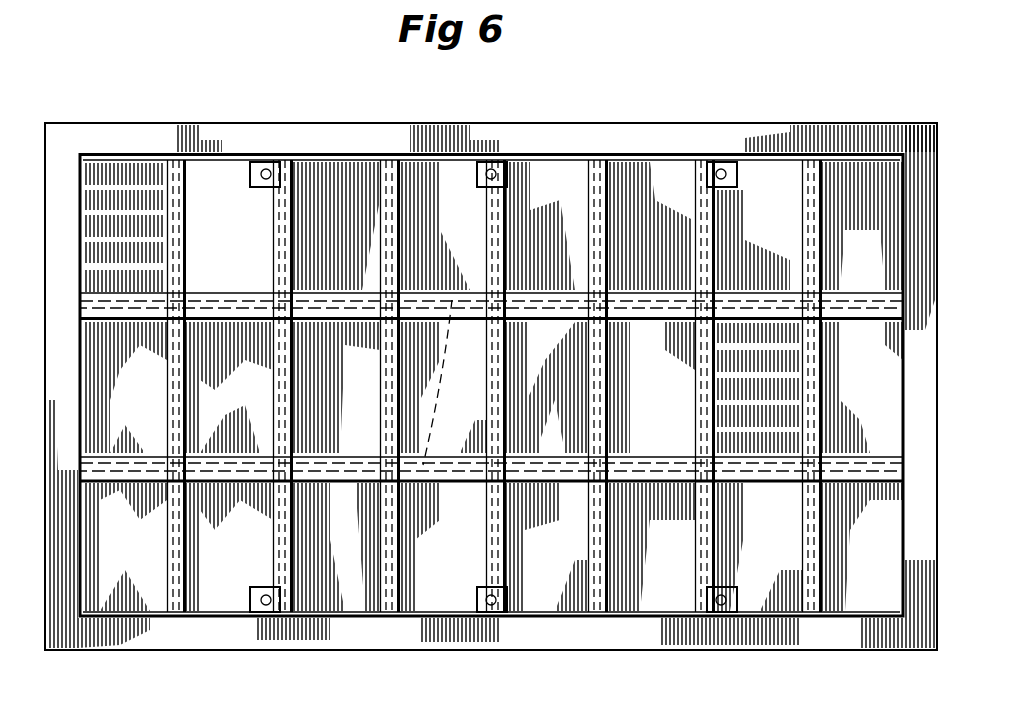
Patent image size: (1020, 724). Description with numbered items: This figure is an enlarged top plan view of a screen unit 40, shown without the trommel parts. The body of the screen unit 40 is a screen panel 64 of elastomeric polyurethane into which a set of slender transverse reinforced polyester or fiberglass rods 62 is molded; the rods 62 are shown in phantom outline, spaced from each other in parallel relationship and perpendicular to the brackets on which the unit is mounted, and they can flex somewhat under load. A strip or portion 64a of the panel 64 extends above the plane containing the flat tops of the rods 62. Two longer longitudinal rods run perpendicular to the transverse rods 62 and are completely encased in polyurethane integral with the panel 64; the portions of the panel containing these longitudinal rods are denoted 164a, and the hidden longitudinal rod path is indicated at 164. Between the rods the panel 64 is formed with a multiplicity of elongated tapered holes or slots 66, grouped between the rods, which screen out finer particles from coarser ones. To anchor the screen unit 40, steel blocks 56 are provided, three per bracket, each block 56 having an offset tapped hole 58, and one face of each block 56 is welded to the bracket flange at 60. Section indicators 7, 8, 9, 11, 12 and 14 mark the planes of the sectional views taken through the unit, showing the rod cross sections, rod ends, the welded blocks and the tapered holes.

The screen unit 40 is at (791, 125).
The steel block 56 is at (250, 176).
The offset tapped hole 58 is at (263, 186).
The weld 60 is at (720, 161).
The transverse reinforced polyester or fiberglass rod 62 is at (273, 406).
The screen panel 64 is at (352, 188).
The strip or portion of the screen panel 64a is at (590, 186).
The elongated holes or slots 66 is at (158, 290).
The hidden conduit 164 is at (441, 382).
The portions of the panel containing the longitudinal rods 164a is at (624, 316).
The section line 7- 7 is at (580, 88).
The section line 8- 8 is at (882, 550).
The section line 9- 9 is at (93, 86).
The section line 11- 11 is at (243, 86).
The section line 12- 12 is at (678, 396).
The section line 14- 14 is at (857, 320).